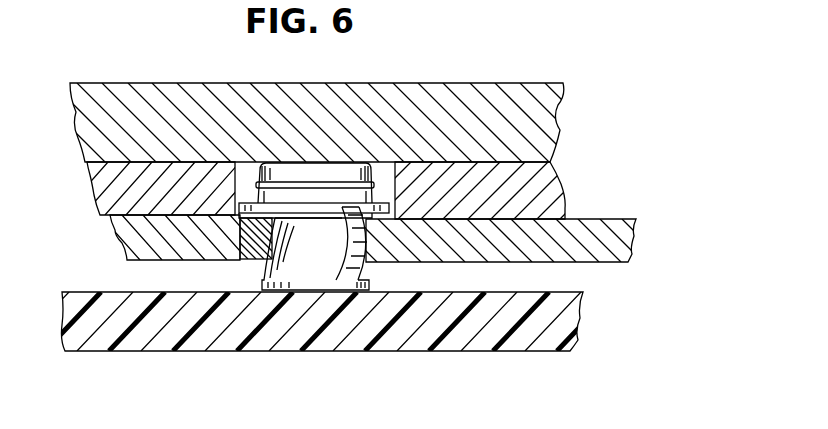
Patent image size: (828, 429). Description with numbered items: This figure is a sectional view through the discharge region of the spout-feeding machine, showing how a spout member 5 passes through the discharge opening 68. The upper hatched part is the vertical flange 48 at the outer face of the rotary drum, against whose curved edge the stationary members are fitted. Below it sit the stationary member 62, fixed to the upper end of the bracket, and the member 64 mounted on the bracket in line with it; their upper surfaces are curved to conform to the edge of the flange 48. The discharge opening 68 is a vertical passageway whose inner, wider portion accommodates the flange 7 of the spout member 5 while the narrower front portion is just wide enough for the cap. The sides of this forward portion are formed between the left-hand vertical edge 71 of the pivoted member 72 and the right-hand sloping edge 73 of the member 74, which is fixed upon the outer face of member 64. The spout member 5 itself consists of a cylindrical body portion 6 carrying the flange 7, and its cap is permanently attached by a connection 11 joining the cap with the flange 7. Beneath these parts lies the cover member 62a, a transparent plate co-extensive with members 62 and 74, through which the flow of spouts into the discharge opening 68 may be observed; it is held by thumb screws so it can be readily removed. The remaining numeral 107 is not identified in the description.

The vertical flange 48 is at (143, 96).
The member 64 is at (107, 178).
The stationary member 62 is at (557, 193).
The cover member 62a is at (398, 330).
The pivoted member 72 is at (450, 243).
The member 74 is at (186, 248).
The discharge opening 68 is at (276, 223).
The spout member 5 is at (328, 181).
The body portion 6 is at (261, 172).
The flange 7 is at (381, 205).
The support body 107 is at (332, 242).
The left-hand vertical edge 71 is at (353, 231).
The right-hand sloping edge 73 is at (284, 249).
The connection 11 is at (306, 246).